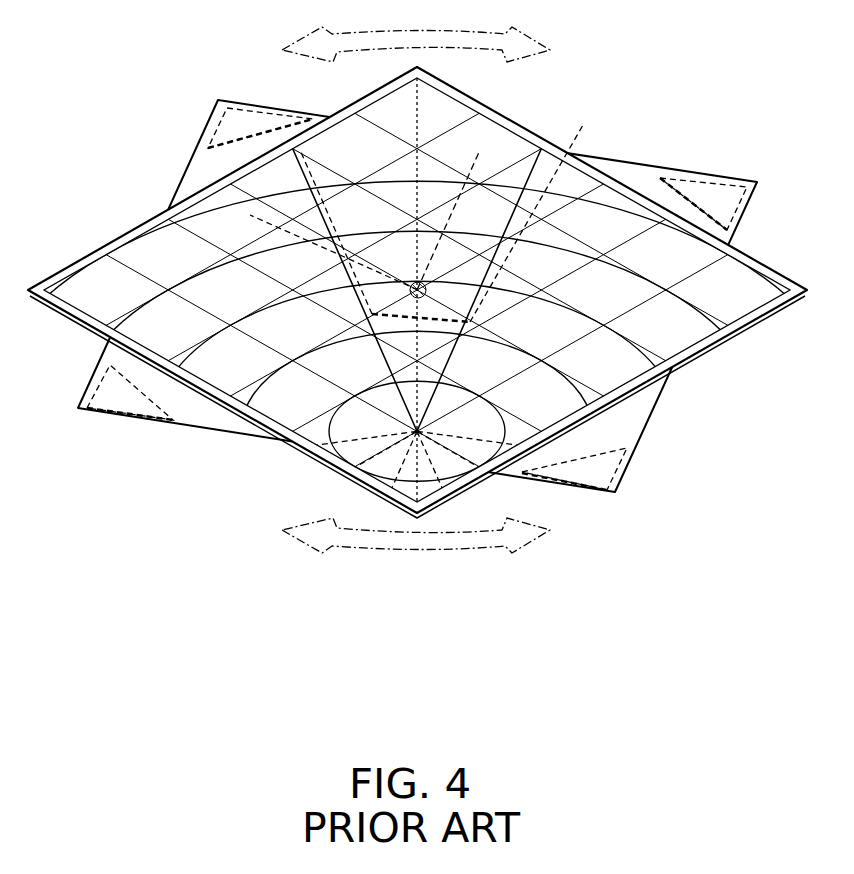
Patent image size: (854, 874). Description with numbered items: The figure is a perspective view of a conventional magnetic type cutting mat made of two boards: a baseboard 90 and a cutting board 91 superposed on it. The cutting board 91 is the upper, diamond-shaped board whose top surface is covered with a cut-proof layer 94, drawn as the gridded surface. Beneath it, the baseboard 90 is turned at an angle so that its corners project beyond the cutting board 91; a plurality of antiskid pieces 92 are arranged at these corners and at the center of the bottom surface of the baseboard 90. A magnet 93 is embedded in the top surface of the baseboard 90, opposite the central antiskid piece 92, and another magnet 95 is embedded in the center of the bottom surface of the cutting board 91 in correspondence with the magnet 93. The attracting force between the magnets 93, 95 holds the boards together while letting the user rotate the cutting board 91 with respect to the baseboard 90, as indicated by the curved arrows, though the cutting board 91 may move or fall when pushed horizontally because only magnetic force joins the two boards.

The baseboard 90 is at (638, 481).
The cutting board 91 is at (772, 337).
The antiskid pieces 92 is at (732, 140).
The magnet 93 is at (272, 445).
The cut-proof layer 94 is at (754, 258).
The magnet 95 is at (488, 150).